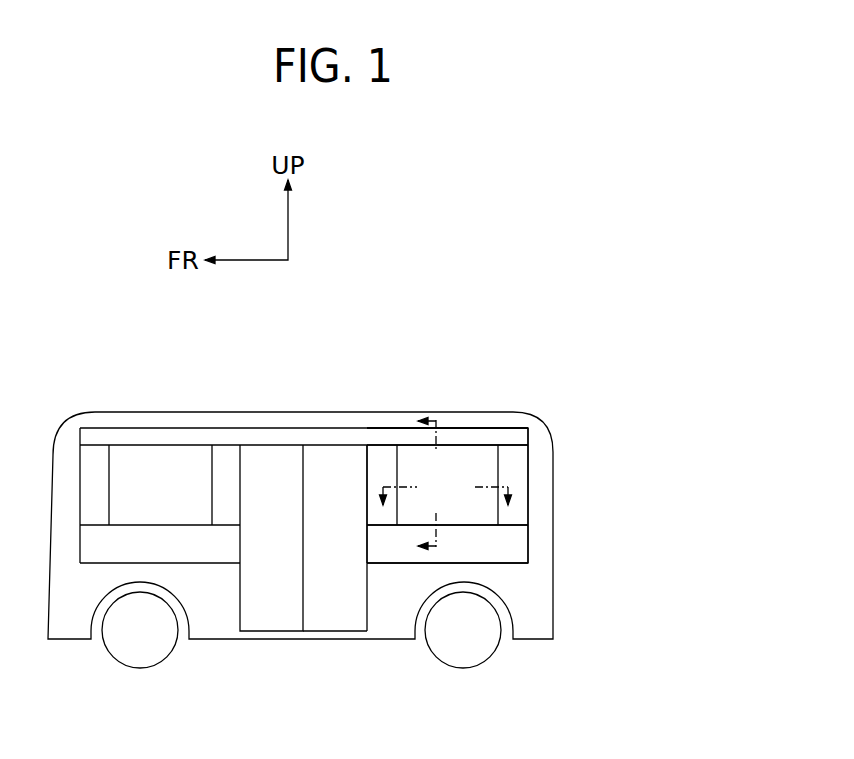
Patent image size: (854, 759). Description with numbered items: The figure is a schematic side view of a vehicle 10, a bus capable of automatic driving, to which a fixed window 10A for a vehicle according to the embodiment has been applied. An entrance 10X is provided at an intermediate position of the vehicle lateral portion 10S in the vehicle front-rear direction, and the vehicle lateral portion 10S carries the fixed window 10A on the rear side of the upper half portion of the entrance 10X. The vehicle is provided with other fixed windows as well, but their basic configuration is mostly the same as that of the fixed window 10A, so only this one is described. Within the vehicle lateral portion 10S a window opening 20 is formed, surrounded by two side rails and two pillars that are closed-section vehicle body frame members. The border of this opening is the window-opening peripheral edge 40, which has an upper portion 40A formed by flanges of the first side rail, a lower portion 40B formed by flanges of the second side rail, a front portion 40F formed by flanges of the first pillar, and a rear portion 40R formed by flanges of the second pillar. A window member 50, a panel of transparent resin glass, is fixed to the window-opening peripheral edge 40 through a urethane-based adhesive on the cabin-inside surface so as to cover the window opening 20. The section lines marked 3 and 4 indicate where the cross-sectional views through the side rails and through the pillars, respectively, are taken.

The vehicle 10 is at (517, 318).
The entrance 10X is at (245, 605).
The vehicle lateral portion 10S is at (387, 620).
The fixed window for a vehicle 10A is at (415, 508).
The window opening 20 is at (408, 446).
The window-opening peripheral edge 40 is at (443, 430).
The upper portion 40A is at (462, 432).
The lower portion 40B is at (477, 535).
The front portion 40F is at (388, 467).
The rear portion 40R is at (503, 467).
The window member 50 is at (448, 495).
The section line III-III 3 is at (432, 421).
The section line IV-IV 4 is at (378, 495).